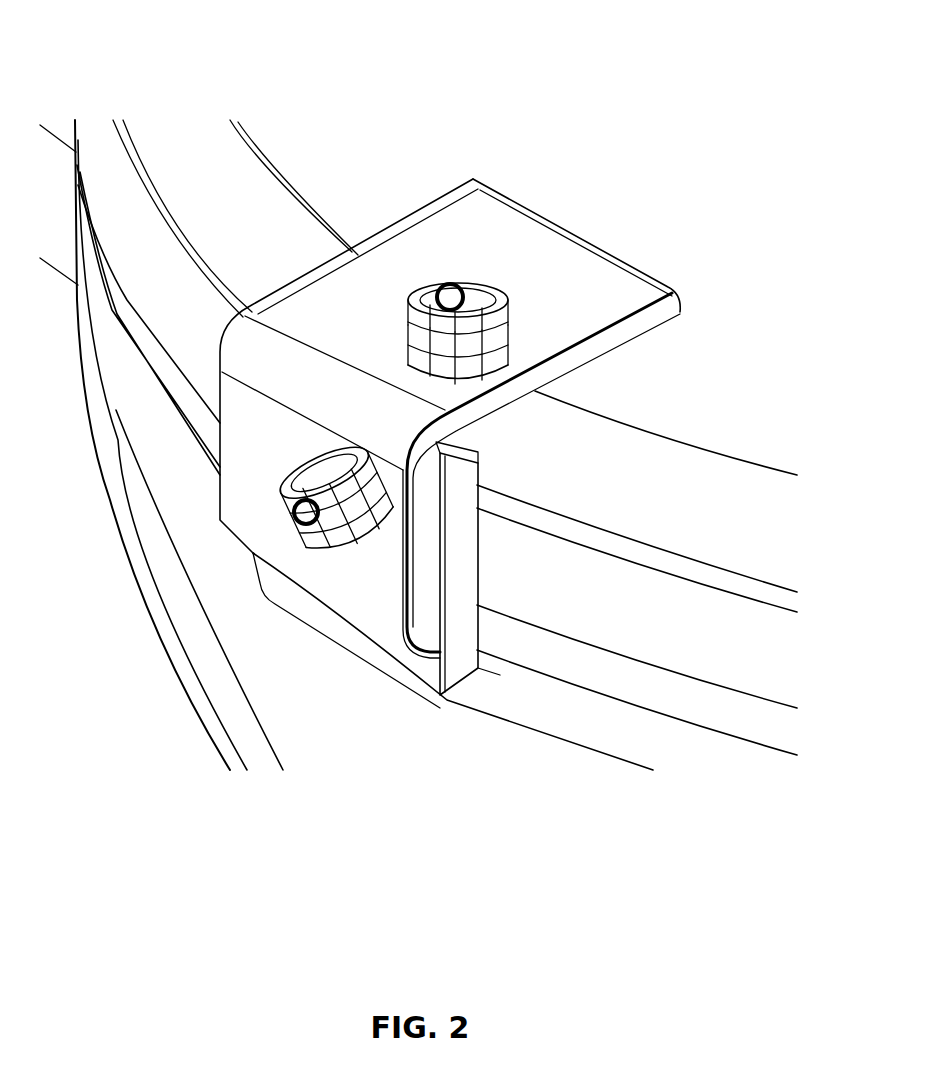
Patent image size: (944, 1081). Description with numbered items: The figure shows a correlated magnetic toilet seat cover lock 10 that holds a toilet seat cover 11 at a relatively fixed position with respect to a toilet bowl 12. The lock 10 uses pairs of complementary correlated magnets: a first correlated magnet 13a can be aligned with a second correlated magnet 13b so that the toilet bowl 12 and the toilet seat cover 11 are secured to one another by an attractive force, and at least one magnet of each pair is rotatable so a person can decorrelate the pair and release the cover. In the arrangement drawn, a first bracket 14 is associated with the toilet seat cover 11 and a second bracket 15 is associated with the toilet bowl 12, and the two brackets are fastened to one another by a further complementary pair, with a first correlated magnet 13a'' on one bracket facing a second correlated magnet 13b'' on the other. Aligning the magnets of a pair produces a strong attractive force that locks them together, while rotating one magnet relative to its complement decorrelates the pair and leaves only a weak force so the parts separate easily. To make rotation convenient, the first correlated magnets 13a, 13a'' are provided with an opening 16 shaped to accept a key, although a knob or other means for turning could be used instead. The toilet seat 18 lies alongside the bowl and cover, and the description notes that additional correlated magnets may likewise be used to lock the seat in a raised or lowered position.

The correlated magnetic toilet seat cover lock 10 is at (319, 418).
The toilet seat cover 11 is at (637, 517).
The toilet bowl 12 is at (547, 890).
The first correlated magnet 13a is at (593, 233).
The second correlated magnet 13b is at (618, 327).
The first correlated magnet of third pair 13a'' is at (287, 651).
The second correlated magnet of third pair 13b'' is at (345, 661).
The first bracket 14 is at (370, 262).
The second bracket 15 is at (458, 680).
The opening 16 is at (457, 293).
The toilet seat 18 is at (563, 620).